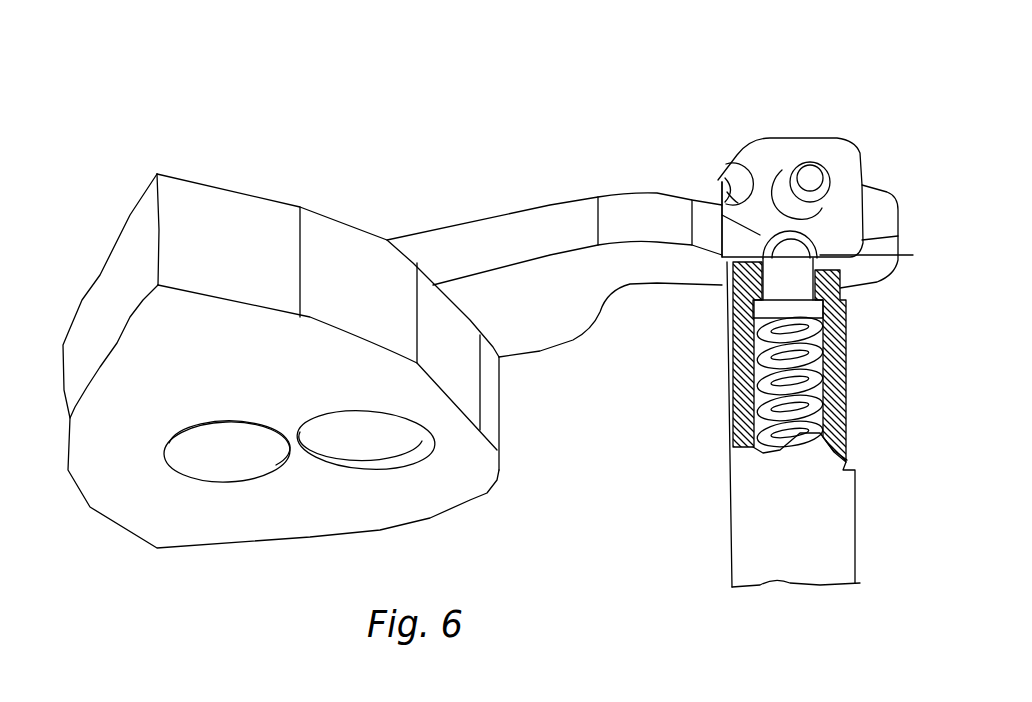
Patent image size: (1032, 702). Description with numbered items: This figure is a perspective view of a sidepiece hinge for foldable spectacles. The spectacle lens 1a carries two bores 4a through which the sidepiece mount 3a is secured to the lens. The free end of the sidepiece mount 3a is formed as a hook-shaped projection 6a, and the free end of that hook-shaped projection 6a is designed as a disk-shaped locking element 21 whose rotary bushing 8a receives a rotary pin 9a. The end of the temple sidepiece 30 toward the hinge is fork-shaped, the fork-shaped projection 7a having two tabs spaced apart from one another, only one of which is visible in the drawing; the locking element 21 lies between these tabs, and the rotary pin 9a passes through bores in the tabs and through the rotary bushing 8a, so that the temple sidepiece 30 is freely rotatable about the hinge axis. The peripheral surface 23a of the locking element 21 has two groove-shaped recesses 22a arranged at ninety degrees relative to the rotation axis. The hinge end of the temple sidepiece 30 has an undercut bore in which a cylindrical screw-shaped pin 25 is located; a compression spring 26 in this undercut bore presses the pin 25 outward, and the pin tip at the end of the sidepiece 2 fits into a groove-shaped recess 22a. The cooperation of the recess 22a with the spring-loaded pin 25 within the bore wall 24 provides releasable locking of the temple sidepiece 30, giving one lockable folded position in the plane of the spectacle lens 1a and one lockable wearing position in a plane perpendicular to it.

The spectacle lens 1a is at (205, 227).
The sidepiece mount 3a is at (537, 228).
The bores 4a is at (250, 469).
The hook-shaped projection 6a is at (687, 263).
The fork-shaped projection 7a is at (724, 202).
The rotary bushing 8a is at (772, 173).
The rotary pin 9a is at (813, 173).
The head 21 is at (847, 180).
The groove-shaped recesses 22a is at (738, 176).
The peripheral surface 23a is at (743, 231).
The pin 2 is at (795, 242).
The housing wall 24 is at (822, 347).
The pin collar 25 is at (785, 282).
The spring 26 is at (800, 387).
The housing 30 is at (837, 513).